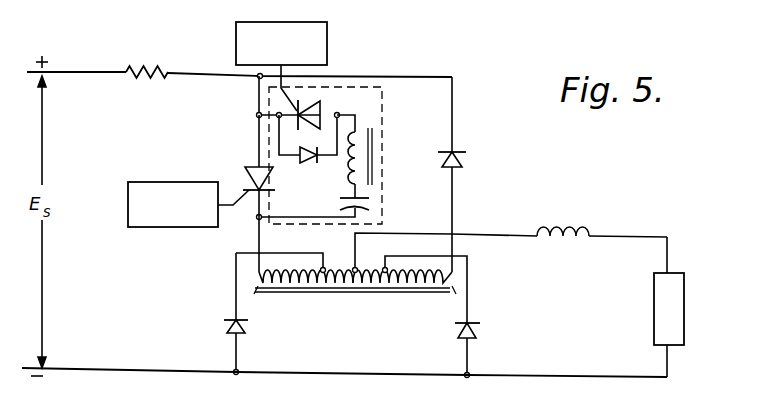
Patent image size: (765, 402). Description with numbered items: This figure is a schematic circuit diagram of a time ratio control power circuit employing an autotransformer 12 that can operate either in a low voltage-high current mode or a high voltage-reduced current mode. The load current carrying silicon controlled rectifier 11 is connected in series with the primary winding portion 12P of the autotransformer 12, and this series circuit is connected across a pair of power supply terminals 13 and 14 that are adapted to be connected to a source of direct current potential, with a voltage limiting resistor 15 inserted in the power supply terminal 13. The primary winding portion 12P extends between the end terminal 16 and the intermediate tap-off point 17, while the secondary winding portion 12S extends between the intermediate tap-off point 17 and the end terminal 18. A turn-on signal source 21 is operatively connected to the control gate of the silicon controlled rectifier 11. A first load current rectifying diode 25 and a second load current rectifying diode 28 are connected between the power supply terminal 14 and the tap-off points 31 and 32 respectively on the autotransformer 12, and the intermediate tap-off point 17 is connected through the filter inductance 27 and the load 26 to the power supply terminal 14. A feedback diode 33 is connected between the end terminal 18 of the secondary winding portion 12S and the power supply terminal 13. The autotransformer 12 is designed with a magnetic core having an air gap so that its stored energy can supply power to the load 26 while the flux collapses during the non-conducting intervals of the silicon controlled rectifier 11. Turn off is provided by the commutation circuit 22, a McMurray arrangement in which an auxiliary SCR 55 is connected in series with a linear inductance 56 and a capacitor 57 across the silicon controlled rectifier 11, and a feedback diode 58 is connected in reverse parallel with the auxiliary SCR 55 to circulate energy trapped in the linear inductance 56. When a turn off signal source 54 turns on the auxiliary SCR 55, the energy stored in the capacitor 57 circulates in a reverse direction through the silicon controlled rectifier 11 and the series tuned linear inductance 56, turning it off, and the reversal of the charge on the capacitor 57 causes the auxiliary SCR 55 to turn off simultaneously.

The silicon controlled rectifier 11 is at (246, 168).
The autotransformer 12 is at (353, 276).
The primary winding portion 12P is at (295, 284).
The secondary winding portion 12S is at (410, 284).
The power supply terminal 13 is at (78, 72).
The power supply terminal 14 is at (132, 362).
The voltage limiting resistor 15 is at (140, 66).
The end terminal 16 is at (252, 298).
The intermediate tap-off point 17 is at (403, 253).
The end terminal 18 is at (449, 301).
The turn-on signal source 21 is at (156, 227).
The commutation circuit 22 is at (383, 107).
The load current rectifying diode 25 is at (480, 333).
The load 26 is at (654, 307).
The filter inductance 27 is at (570, 245).
The load current rectifying diode 28 is at (226, 333).
The tap-off point 31 is at (386, 266).
The tap-off point 32 is at (321, 267).
The feedback diode 33 is at (466, 160).
The turn off signal source 54 is at (327, 43).
The auxiliary SCR 55 is at (318, 112).
The linear inductance 56 is at (348, 172).
The capacitor 57 is at (347, 199).
The feedback diode 58 is at (309, 151).